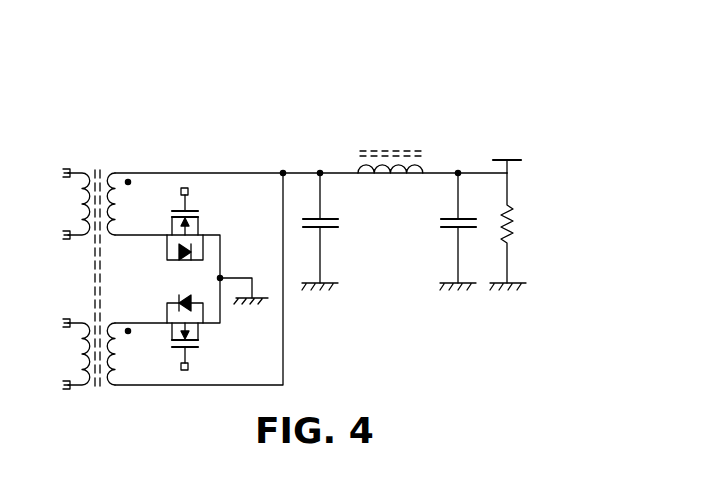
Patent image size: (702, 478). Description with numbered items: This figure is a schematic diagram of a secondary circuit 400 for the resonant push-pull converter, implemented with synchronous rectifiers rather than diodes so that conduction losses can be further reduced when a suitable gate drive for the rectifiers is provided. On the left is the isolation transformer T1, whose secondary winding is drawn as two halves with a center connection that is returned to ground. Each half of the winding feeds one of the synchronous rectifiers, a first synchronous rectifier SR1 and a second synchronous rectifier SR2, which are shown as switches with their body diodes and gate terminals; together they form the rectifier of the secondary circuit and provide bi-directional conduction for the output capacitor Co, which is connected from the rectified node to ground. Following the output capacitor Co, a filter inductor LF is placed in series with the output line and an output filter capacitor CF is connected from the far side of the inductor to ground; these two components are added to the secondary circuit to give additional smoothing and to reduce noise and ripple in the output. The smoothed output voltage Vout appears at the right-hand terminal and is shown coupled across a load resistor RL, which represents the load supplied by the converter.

The secondary circuit with synchronous rectifiers 400 is at (453, 72).
The isolation transformer T1 is at (97, 265).
The synchronous rectifier SR1 is at (206, 332).
The synchronous rectifier SR2 is at (206, 224).
The output capacitor Co is at (334, 231).
The filter inductor LF is at (390, 148).
The output filter capacitor CF is at (442, 231).
The output voltage Vout is at (503, 152).
The load resistor RL is at (517, 231).